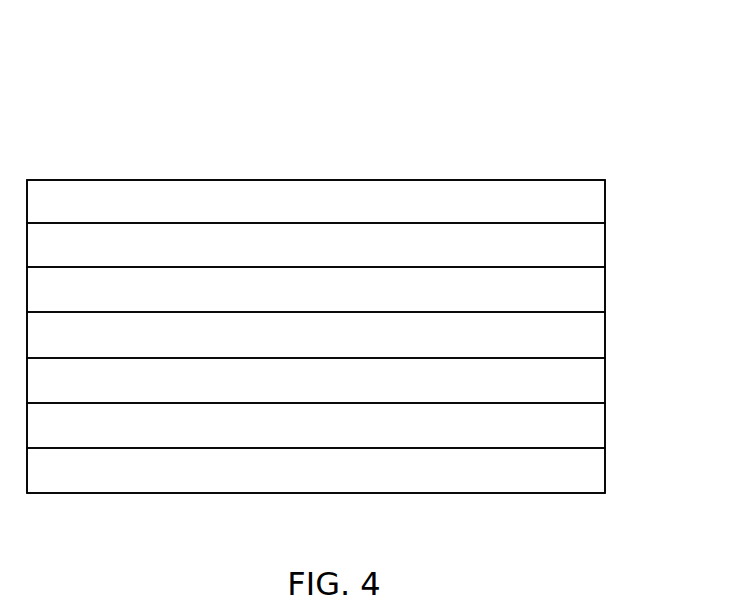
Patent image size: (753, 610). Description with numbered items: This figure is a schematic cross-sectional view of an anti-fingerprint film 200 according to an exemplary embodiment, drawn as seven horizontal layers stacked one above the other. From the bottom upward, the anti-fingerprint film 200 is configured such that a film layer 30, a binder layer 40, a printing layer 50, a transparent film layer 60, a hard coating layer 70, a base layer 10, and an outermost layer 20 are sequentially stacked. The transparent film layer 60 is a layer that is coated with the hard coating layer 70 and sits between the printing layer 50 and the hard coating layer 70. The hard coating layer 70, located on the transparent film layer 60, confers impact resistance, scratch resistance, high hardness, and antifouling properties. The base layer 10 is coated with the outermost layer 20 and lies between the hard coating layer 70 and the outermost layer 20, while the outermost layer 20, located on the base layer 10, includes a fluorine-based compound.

The anti-fingerprint film 200 is at (492, 40).
The outermost layer 20 is at (583, 195).
The base layer 10 is at (583, 256).
The hard coating layer 70 is at (583, 298).
The transparent film layer 60 is at (583, 343).
The printing layer 50 is at (583, 385).
The binder layer 40 is at (583, 430).
The film layer 30 is at (583, 481).